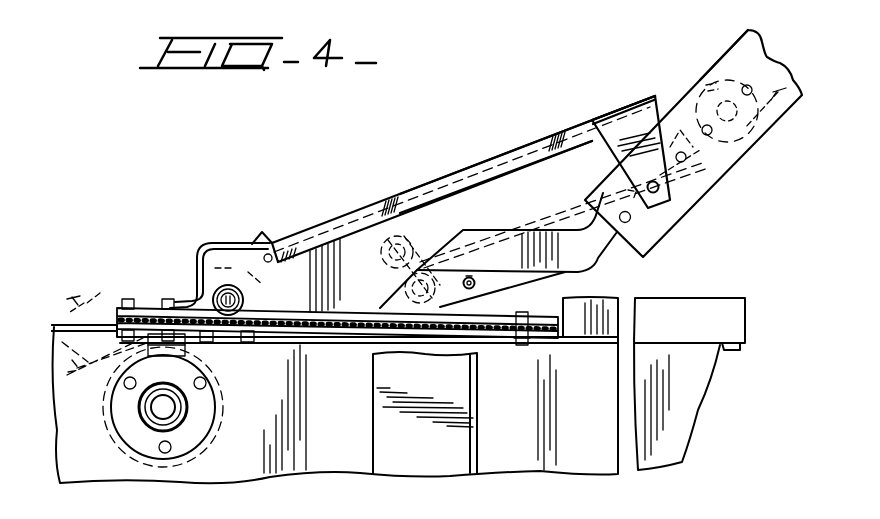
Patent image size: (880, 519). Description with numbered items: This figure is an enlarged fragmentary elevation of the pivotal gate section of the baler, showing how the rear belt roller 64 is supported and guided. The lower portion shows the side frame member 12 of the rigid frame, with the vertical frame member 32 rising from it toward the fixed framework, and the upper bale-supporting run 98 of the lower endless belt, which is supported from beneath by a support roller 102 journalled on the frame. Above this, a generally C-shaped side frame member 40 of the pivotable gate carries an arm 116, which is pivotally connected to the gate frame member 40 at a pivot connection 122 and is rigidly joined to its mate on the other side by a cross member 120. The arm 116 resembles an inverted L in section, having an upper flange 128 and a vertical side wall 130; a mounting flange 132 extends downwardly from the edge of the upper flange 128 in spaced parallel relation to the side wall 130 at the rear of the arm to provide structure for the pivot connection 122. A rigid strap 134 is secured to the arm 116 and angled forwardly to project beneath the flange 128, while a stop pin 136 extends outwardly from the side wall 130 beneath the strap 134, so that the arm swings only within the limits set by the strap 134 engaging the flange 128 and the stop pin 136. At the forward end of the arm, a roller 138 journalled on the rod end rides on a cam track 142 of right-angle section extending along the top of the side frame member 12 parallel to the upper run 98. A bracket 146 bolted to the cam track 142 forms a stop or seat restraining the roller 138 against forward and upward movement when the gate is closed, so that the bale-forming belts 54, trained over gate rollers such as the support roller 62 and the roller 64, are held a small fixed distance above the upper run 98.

The side frame member 12 is at (687, 397).
The vertical frame member 32 is at (473, 453).
The side frame member of gate 40 is at (740, 50).
The bale-forming belt 54 is at (782, 114).
The support roller 62 is at (707, 73).
The roller 64 is at (279, 233).
The upper bale-supporting run 98 is at (60, 345).
The support roller 102 is at (225, 408).
The arm 116 is at (363, 195).
The cross member 120 is at (422, 237).
The pivot connection 122 is at (658, 190).
The upper flange 128 is at (528, 140).
The side wall 130 is at (493, 203).
The mounting flange 132 is at (600, 140).
The rigid strap 134 is at (598, 258).
The stop pin 136 is at (475, 287).
The roller 138 is at (244, 291).
The cam track 142 is at (737, 307).
The bracket 146 is at (241, 243).